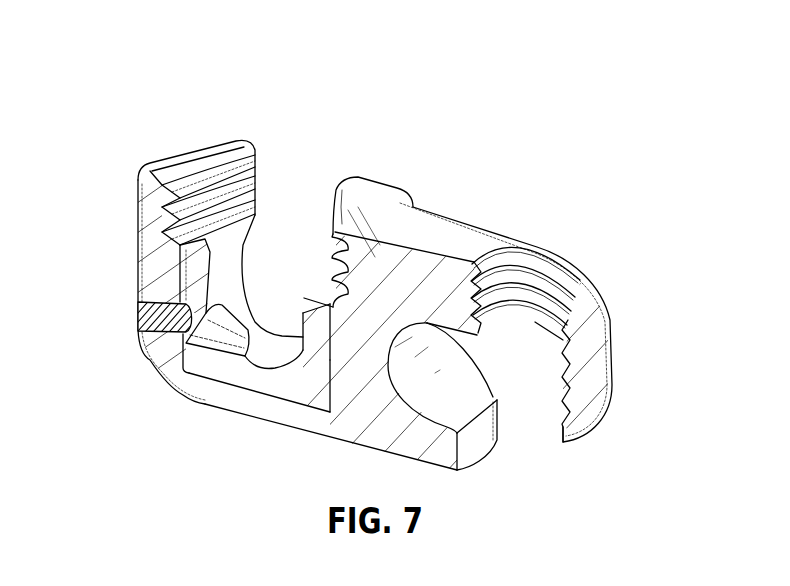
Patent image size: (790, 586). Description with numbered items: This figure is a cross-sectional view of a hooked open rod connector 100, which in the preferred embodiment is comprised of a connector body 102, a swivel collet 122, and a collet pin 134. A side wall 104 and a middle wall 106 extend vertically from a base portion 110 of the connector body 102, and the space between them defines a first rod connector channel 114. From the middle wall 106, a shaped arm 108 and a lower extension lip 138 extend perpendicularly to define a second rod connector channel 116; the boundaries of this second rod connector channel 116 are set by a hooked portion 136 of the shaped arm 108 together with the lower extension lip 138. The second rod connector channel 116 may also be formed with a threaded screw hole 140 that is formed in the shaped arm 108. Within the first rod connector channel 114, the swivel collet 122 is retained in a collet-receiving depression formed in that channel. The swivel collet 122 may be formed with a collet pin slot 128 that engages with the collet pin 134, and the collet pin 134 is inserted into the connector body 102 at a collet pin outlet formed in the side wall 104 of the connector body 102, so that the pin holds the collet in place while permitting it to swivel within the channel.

The open rod connector 100 is at (175, 100).
The connector body 102 is at (153, 352).
The side wall 104 is at (150, 247).
The middle wall 106 is at (353, 320).
The shaped arm 108 is at (467, 243).
The base portion 110 is at (230, 405).
The first rod connector channel 114 is at (320, 198).
The second rod connector channel 116 is at (528, 413).
The swivel collet 122 is at (224, 373).
The collet pin slot 128 is at (237, 336).
The collet pin 134 is at (140, 316).
The hooked portion 136 is at (588, 397).
The lower extension lip 138 is at (444, 457).
The threaded screw hole 140 is at (535, 264).